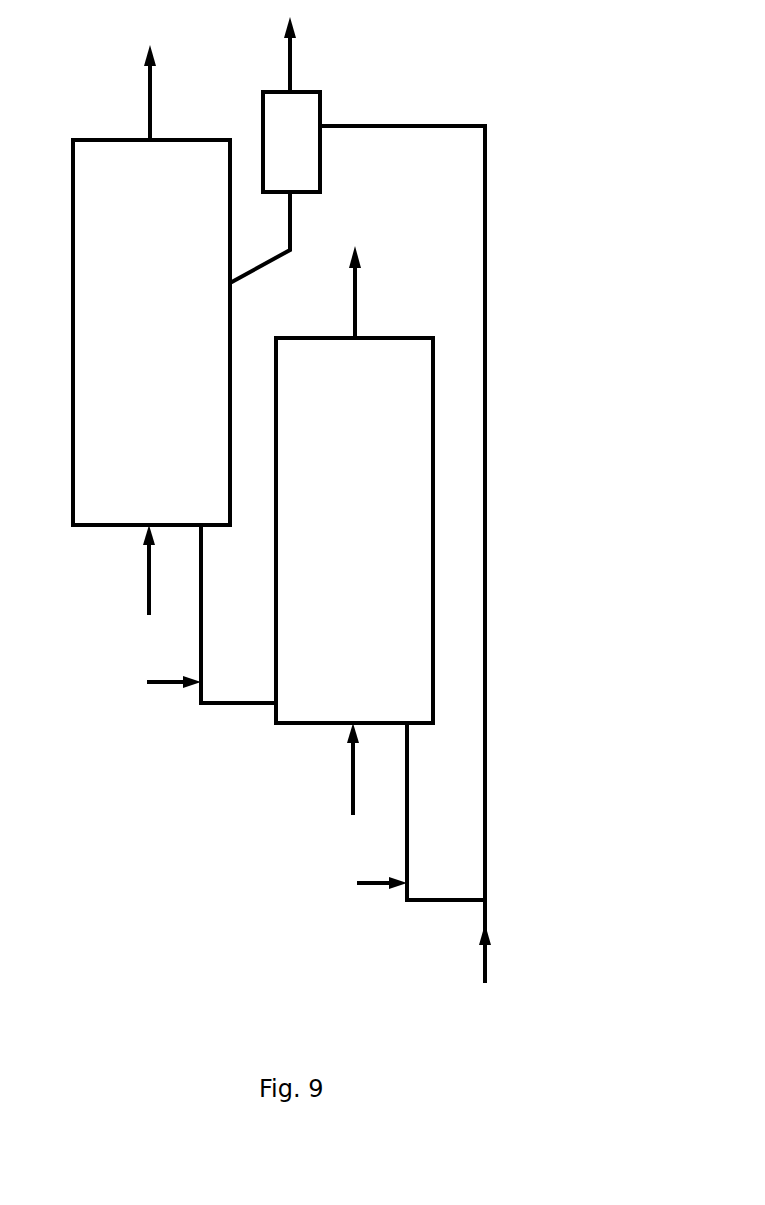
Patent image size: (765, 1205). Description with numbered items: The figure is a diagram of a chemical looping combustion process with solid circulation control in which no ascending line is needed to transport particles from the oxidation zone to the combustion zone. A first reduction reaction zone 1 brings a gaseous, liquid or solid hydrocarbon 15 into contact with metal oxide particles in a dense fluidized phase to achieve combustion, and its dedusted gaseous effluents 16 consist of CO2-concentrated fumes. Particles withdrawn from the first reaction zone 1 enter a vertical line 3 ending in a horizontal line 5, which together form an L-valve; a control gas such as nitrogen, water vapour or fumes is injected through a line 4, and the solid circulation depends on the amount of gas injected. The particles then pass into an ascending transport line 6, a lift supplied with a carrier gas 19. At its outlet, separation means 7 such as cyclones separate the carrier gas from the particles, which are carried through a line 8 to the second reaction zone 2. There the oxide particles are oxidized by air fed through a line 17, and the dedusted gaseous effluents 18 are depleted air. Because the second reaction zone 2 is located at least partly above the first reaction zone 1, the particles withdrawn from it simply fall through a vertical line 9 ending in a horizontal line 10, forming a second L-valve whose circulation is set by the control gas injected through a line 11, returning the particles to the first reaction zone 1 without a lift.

The first reduction reaction zone 1 is at (354, 530).
The second reaction zone 2 is at (151, 332).
The vertical line 3 is at (408, 783).
The line 4 is at (373, 886).
The horizontal line 5 is at (435, 905).
The ascending transport line 6 is at (485, 763).
The separation means 7 is at (291, 104).
The line 8 is at (253, 267).
The vertical line 9 is at (202, 611).
The horizontal line 10 is at (233, 705).
The line 11 is at (167, 684).
The hydrocarbon 15 is at (348, 803).
The gaseous effluents 16 is at (351, 319).
The line 17 is at (147, 580).
The gaseous effluents 18 is at (147, 118).
The carrier gas 19 is at (480, 968).